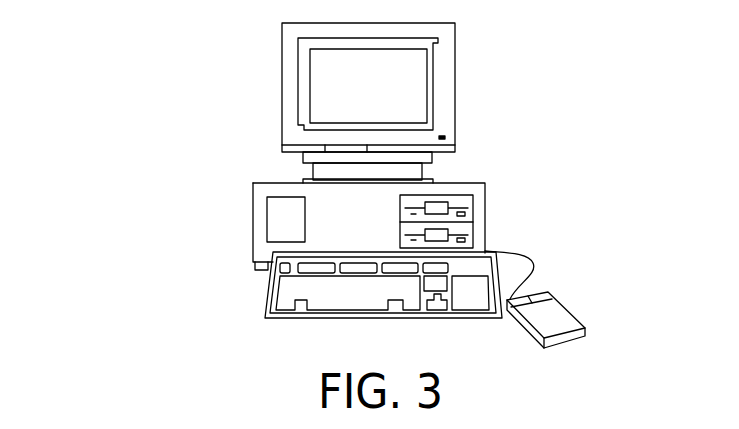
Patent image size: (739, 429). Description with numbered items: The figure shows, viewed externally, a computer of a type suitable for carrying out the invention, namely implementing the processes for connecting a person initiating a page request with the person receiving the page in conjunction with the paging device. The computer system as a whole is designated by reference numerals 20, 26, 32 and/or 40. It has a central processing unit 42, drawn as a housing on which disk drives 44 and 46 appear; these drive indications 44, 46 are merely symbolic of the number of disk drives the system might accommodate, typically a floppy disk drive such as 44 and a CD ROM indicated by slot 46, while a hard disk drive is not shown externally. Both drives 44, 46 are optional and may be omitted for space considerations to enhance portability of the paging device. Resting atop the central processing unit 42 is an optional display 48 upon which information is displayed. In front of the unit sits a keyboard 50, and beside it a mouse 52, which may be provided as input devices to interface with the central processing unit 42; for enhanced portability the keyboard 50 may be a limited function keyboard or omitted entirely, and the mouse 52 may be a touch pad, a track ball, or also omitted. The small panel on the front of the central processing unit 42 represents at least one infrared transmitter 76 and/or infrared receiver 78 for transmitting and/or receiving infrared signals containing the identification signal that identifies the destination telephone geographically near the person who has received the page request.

The computer system 20 is at (330, 182).
The computer system 26 is at (330, 182).
The computer system 32 is at (330, 182).
The computer system 40 is at (203, 63).
The central processing unit 42 is at (266, 173).
The floppy disk drive 44 is at (387, 207).
The CD ROM slot 46 is at (387, 236).
The display 48 is at (470, 67).
The keyboard 50 is at (253, 290).
The mouse 52 is at (582, 298).
The infrared transmitter 76 is at (219, 219).
The infrared receiver 78 is at (277, 219).